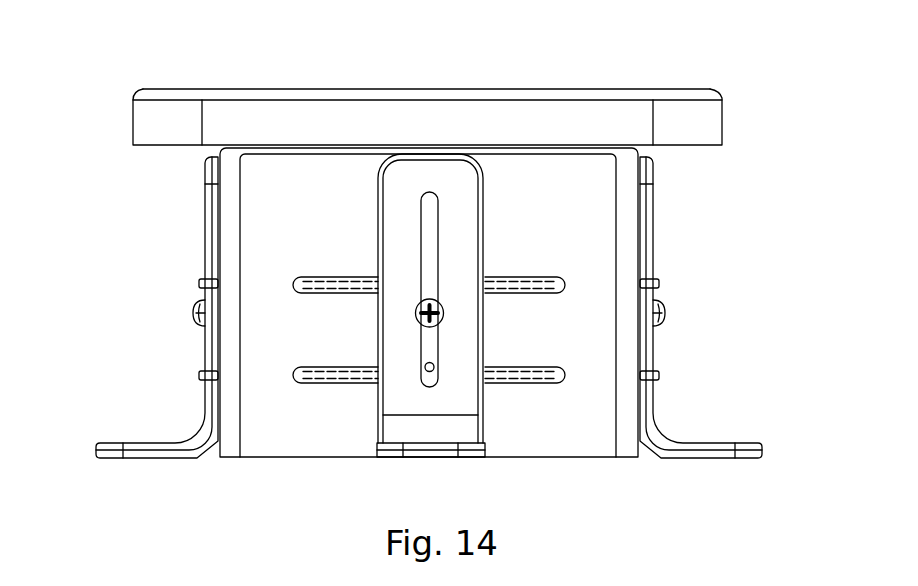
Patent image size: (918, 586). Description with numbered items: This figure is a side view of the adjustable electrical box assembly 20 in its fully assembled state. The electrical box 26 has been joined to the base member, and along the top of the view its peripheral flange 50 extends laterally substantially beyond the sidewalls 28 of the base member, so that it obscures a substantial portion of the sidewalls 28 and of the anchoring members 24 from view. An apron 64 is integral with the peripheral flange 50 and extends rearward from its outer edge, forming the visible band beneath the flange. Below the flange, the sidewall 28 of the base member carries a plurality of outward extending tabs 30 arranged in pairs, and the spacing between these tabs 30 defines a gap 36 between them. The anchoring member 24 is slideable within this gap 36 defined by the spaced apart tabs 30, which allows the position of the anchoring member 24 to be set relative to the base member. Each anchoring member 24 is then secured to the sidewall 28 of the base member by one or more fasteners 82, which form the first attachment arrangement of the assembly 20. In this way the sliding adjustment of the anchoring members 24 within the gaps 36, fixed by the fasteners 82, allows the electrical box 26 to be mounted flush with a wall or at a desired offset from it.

The adjustable electrical box assembly 20 is at (104, 86).
The anchoring member 24 is at (417, 269).
The electrical box 26 is at (682, 88).
The sidewall 28 is at (560, 206).
The outward extending tab 30 is at (338, 276).
The gap 36 is at (496, 403).
The peripheral flange 50 is at (278, 88).
The apron 64 is at (464, 133).
The fastener 82 is at (193, 313).